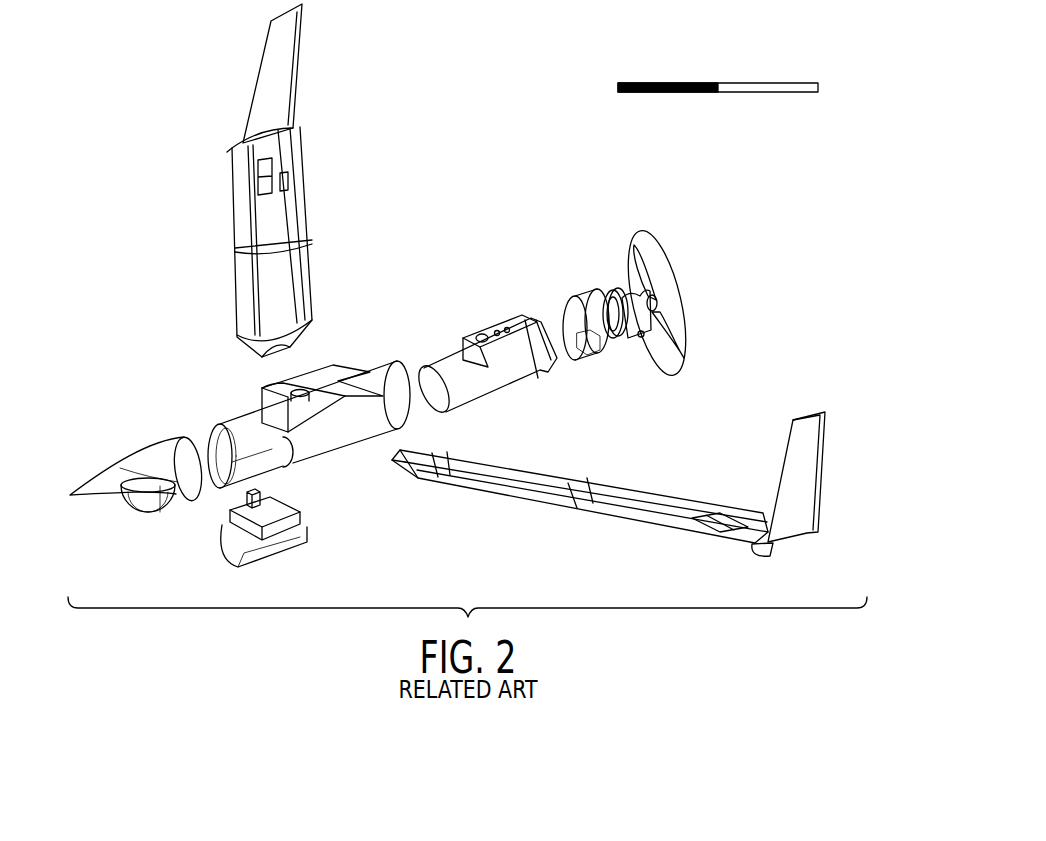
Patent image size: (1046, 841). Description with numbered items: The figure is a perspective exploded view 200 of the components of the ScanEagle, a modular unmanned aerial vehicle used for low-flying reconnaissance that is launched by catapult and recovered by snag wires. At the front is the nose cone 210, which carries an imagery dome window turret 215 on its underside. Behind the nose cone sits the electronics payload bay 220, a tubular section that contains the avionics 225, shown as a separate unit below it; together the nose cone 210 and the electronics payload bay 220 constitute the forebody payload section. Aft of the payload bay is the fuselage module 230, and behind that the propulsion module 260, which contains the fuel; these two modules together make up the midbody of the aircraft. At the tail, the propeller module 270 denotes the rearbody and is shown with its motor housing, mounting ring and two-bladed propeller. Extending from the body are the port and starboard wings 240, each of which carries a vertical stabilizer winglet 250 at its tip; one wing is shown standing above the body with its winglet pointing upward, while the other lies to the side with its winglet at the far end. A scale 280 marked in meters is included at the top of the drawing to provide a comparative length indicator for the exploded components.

The perspective exploded view 200 is at (186, 117).
The nose cone 210 is at (170, 437).
The imagery dome window turret 215 is at (125, 503).
The electronics payload bay 220 is at (233, 420).
The avionics 225 is at (311, 525).
The fuselage module 230 is at (331, 372).
The port and starboard wings 240 is at (236, 250).
The vertical stabilizer winglets 250 is at (297, 87).
The propulsion module 260 is at (507, 321).
The propeller module 270 is at (607, 354).
The scale 280 is at (778, 129).